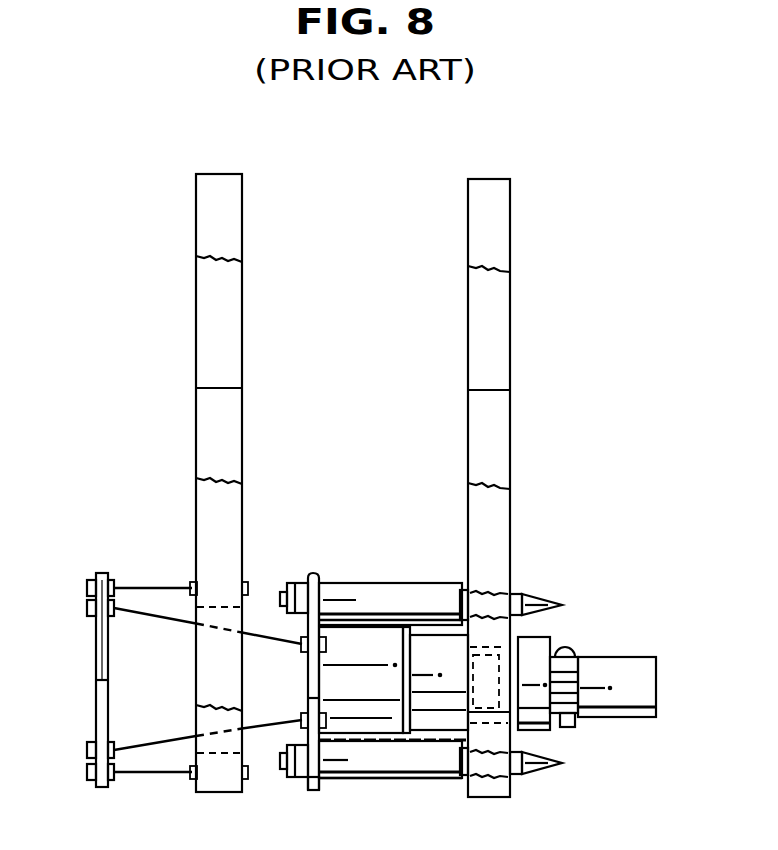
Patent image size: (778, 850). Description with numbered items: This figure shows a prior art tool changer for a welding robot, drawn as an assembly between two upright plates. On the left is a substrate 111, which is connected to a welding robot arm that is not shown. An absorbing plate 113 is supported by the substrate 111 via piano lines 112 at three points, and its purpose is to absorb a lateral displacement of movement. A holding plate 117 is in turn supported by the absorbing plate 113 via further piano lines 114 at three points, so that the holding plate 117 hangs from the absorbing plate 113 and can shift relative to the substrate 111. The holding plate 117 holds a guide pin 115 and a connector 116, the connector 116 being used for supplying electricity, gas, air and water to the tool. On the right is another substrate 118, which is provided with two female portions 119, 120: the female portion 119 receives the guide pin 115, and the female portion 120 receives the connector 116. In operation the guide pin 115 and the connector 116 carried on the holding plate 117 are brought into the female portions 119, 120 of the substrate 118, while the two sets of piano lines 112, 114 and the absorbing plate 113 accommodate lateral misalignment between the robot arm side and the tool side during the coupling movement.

The substrate 111 is at (207, 322).
The piano lines 112 is at (137, 585).
The absorbing plate 113 is at (97, 702).
The piano lines 114 is at (263, 632).
The guide pin 115 is at (408, 590).
The connector 116 is at (358, 728).
The holding plate 117 is at (318, 790).
The substrate 118 is at (503, 323).
The female portion 119 is at (486, 597).
The female portion 120 is at (515, 658).